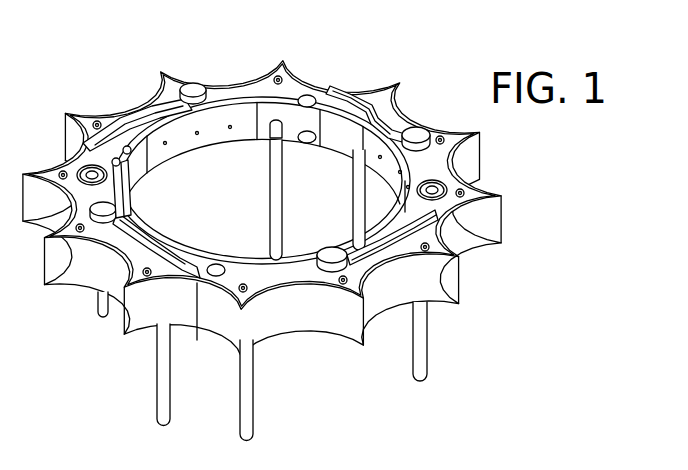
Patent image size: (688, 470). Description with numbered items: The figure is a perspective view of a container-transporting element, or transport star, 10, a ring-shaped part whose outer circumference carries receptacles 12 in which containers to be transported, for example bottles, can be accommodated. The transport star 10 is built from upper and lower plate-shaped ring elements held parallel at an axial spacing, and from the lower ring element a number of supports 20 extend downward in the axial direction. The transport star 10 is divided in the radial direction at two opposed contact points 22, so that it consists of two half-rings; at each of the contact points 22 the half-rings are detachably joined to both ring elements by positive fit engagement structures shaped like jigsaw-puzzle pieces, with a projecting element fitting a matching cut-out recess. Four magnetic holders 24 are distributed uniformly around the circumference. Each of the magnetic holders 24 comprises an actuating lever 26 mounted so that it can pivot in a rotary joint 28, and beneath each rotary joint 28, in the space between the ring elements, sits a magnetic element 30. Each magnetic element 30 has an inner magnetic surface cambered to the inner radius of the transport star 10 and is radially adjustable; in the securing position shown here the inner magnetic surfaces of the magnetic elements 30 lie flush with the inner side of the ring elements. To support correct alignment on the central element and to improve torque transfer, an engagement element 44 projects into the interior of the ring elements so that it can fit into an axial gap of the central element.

The container-transporting element 10 is at (568, 203).
The receptacles 12 is at (307, 320).
The supports 20 is at (241, 408).
The contact points 22 is at (325, 79).
The magnetic holders 24 is at (222, 98).
The actuating lever 26 is at (140, 110).
The rotary joint 28 is at (187, 87).
The magnetic element 30 is at (222, 133).
The engagement element 44 is at (130, 204).